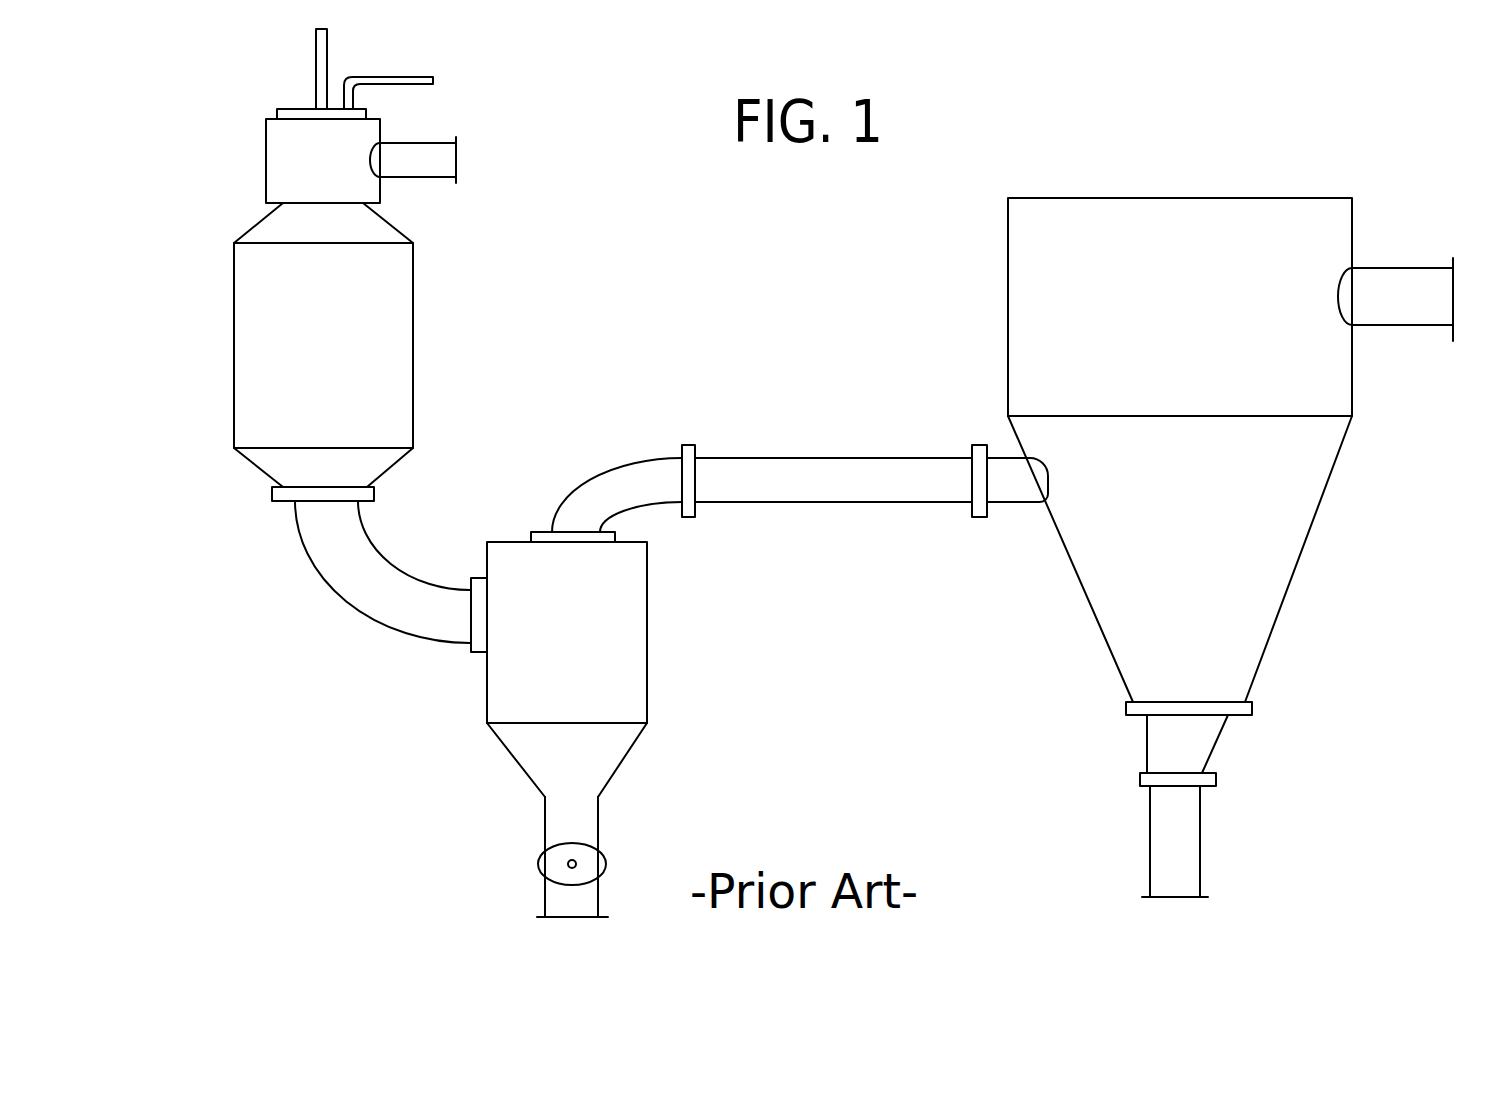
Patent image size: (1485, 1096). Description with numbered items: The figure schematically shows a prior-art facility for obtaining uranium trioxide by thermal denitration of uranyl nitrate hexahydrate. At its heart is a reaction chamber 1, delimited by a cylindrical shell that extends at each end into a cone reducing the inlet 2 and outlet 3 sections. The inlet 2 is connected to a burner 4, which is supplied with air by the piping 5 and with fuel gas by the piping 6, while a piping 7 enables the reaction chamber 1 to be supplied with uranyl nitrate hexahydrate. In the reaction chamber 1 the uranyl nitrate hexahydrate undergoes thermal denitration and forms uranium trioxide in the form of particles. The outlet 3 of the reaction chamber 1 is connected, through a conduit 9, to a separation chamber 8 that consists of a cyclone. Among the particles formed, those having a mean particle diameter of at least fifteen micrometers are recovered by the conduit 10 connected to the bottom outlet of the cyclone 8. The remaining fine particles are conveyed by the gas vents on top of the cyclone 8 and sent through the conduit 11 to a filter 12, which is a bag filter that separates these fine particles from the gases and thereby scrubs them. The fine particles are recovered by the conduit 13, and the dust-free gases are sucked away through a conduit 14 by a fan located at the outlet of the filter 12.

The reaction chamber 1 is at (245, 307).
The inlet 2 is at (252, 215).
The outlet 3 is at (265, 495).
The burner 4 is at (282, 155).
The piping 5 is at (423, 165).
The piping 6 is at (405, 77).
The piping 7 is at (316, 53).
The separation chamber 8 is at (637, 663).
The conduit 9 is at (352, 585).
The conduit 10 is at (551, 897).
The conduit 11 is at (768, 495).
The filter 12 is at (1287, 553).
The conduit 13 is at (1165, 837).
The conduit 14 is at (1388, 275).